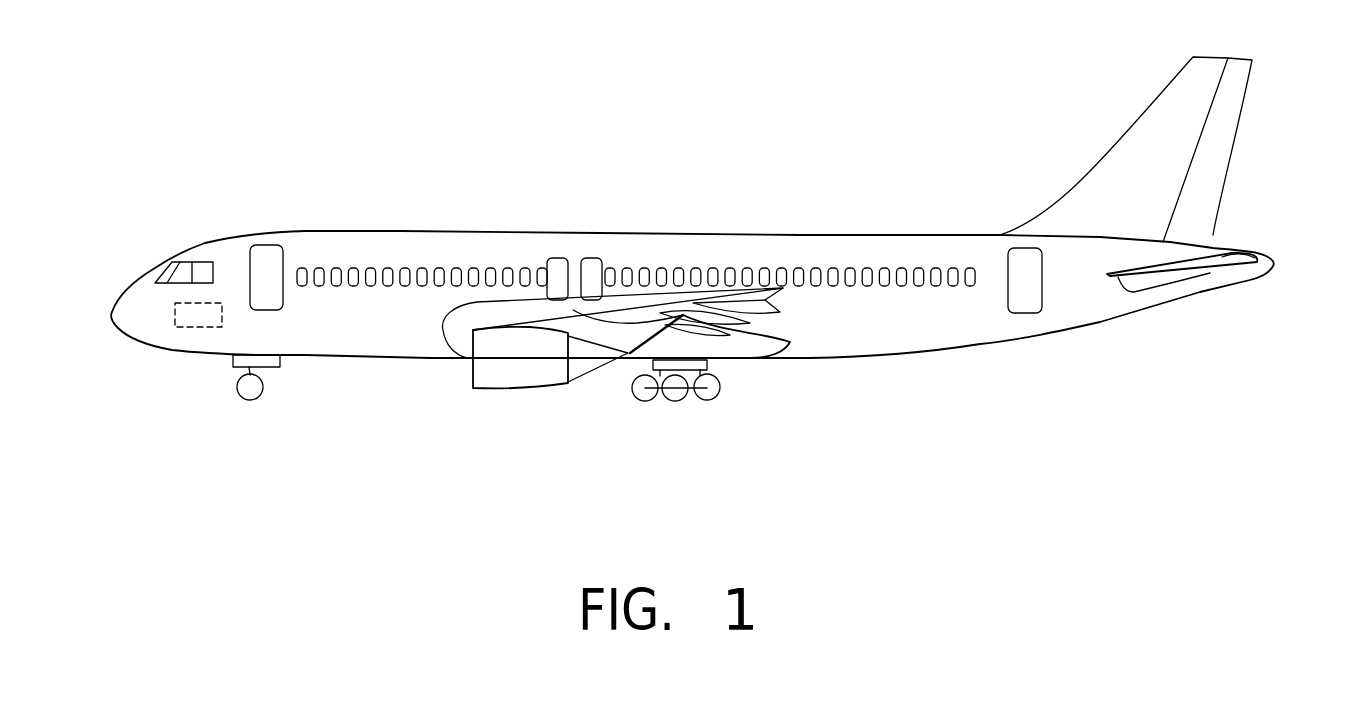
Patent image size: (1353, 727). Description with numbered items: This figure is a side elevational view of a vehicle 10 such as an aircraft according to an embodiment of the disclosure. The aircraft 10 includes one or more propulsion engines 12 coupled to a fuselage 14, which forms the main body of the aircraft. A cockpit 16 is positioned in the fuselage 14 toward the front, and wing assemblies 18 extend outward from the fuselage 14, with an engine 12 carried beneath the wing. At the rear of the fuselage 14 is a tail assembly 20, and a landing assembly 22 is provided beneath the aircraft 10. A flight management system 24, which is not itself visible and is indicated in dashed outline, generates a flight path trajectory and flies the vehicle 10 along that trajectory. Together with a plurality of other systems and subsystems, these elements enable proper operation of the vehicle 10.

The vehicle 10 is at (548, 102).
The propulsion engine 12 is at (512, 375).
The fuselage 14 is at (462, 232).
The cockpit 16 is at (222, 257).
The wing assembly 18 is at (623, 313).
The tail assembly 20 is at (1133, 155).
The landing assembly 22 is at (718, 398).
The flight management system 24 is at (198, 327).